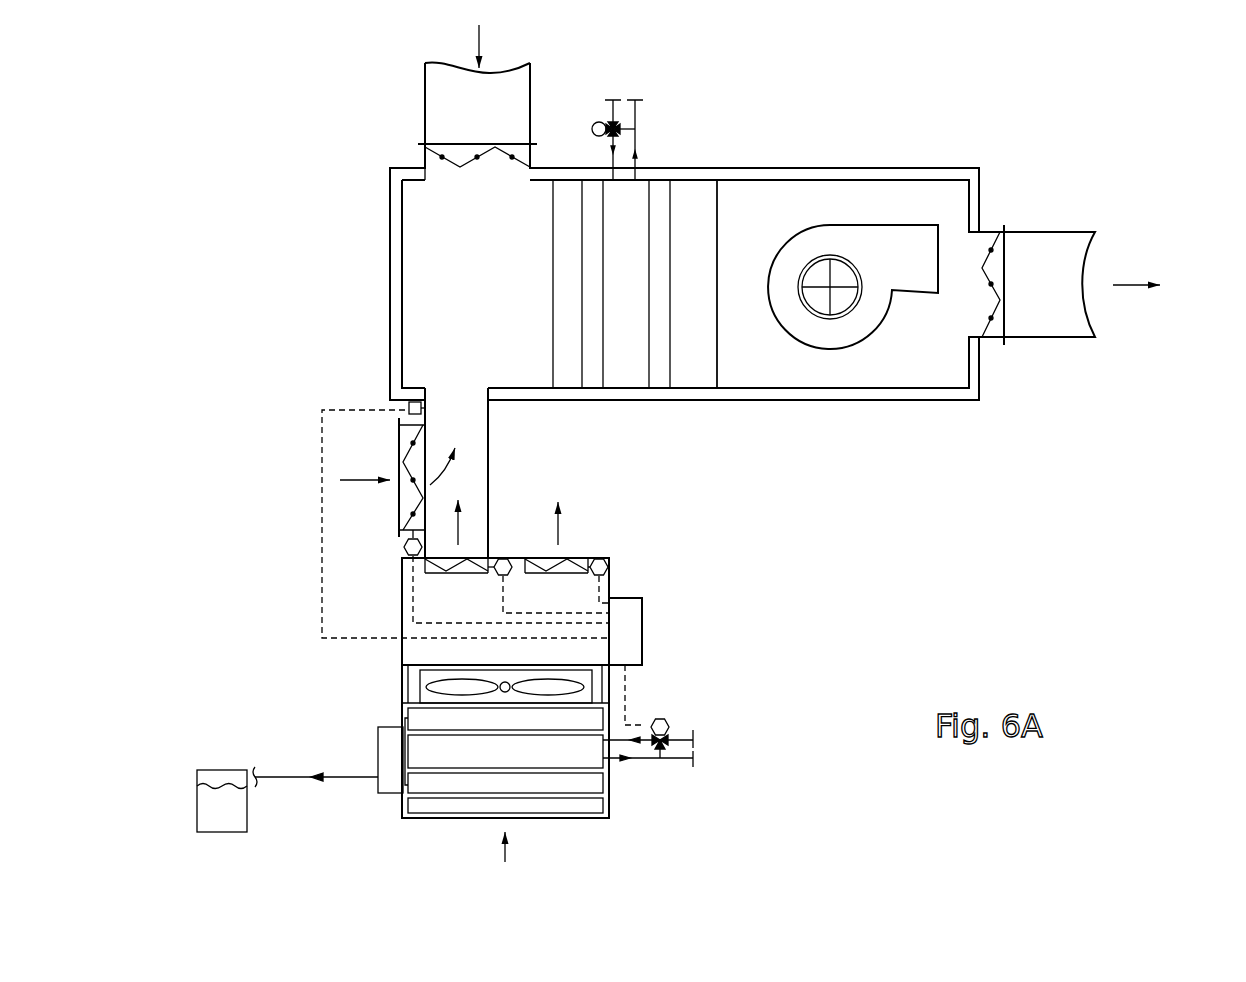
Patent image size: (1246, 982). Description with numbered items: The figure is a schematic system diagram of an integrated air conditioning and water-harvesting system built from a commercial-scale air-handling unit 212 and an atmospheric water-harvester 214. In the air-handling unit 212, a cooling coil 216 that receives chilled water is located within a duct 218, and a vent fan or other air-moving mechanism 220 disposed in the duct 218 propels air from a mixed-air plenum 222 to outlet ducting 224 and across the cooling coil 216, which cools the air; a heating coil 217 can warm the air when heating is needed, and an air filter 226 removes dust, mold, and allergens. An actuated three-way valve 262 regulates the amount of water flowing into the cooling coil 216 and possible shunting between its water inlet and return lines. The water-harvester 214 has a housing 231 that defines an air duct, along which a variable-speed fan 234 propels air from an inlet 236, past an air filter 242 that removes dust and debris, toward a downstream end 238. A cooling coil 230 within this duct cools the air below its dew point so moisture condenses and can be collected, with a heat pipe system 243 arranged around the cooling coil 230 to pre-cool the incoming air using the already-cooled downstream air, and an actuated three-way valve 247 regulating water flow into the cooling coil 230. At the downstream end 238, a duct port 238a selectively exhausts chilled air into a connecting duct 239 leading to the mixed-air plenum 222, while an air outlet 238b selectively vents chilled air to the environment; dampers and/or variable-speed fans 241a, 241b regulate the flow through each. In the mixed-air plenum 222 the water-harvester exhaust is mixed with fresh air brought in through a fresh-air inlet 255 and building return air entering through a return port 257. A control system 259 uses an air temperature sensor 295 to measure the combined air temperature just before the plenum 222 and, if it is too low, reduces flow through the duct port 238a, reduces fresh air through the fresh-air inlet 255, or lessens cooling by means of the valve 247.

The air-handling unit 212 is at (847, 93).
The atmospheric water-harvester 214 is at (712, 642).
The cooling coil 216 is at (642, 180).
The heating coil 217 is at (698, 180).
The duct 218 is at (781, 217).
The vent fan or air-moving mechanism 220 is at (883, 225).
The mixed-air plenum 222 is at (480, 303).
The outlet ducting 224 is at (1135, 258).
The air filter 226 is at (570, 390).
The cooling coil 230 is at (610, 766).
The housing 231 is at (610, 793).
The variable-speed fan 234 is at (418, 693).
The inlet 236 is at (447, 835).
The downstream end 238 is at (640, 560).
The duct port 238a is at (477, 558).
The air outlet 238b is at (577, 558).
The connecting duct 239 is at (472, 423).
The damper and/or variable-speed fan 241a is at (428, 574).
The damper and/or variable-speed fan 241b is at (528, 575).
The air filter 242 is at (575, 815).
The heat pipe system 243 is at (610, 708).
The actuated three-way valve 247 is at (665, 722).
The fresh-air inlet 255 is at (375, 507).
The return port 257 is at (425, 168).
The control system 259 is at (643, 612).
The actuated three-way valve 262 is at (596, 124).
The air temperature sensor 295 is at (408, 406).